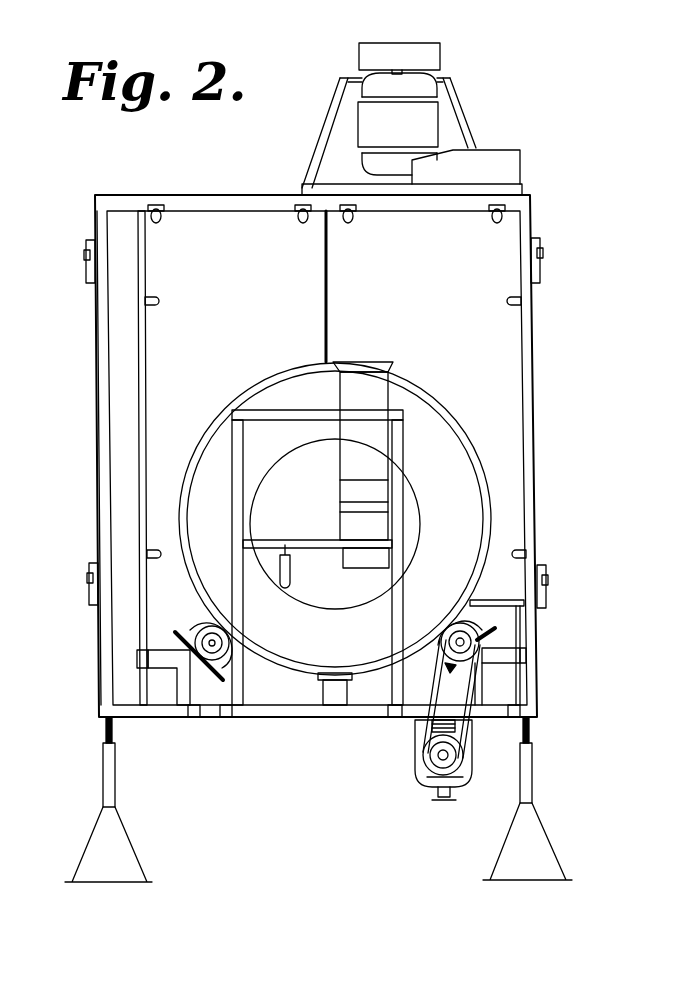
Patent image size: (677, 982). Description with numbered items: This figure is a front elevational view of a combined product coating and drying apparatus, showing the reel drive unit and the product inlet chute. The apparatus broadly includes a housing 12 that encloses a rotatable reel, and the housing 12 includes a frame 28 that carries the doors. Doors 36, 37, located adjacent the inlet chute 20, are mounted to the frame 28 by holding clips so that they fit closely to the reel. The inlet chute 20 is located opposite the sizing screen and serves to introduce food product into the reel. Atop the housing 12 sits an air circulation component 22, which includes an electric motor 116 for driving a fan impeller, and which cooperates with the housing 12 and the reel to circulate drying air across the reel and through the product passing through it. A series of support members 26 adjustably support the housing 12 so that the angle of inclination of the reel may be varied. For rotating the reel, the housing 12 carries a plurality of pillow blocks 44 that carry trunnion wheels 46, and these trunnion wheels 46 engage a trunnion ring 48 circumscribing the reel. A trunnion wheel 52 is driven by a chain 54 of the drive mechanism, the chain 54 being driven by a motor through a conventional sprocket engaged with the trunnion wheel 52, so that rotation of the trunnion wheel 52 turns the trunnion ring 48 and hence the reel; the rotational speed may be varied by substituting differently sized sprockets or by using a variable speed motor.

The housing 12 is at (534, 198).
The inlet chute 20 is at (335, 427).
The air circulation component 22 is at (417, 119).
The support members 26 is at (117, 774).
The frame 28 is at (405, 448).
The door 36 is at (200, 232).
The door 37 is at (509, 234).
The pillow blocks 44 is at (138, 628).
The trunnion wheels 46 is at (198, 618).
The trunnion ring 48 is at (393, 383).
The trunnion wheel 52 is at (478, 623).
The chain 54 is at (416, 705).
The electric motor 116 is at (437, 85).